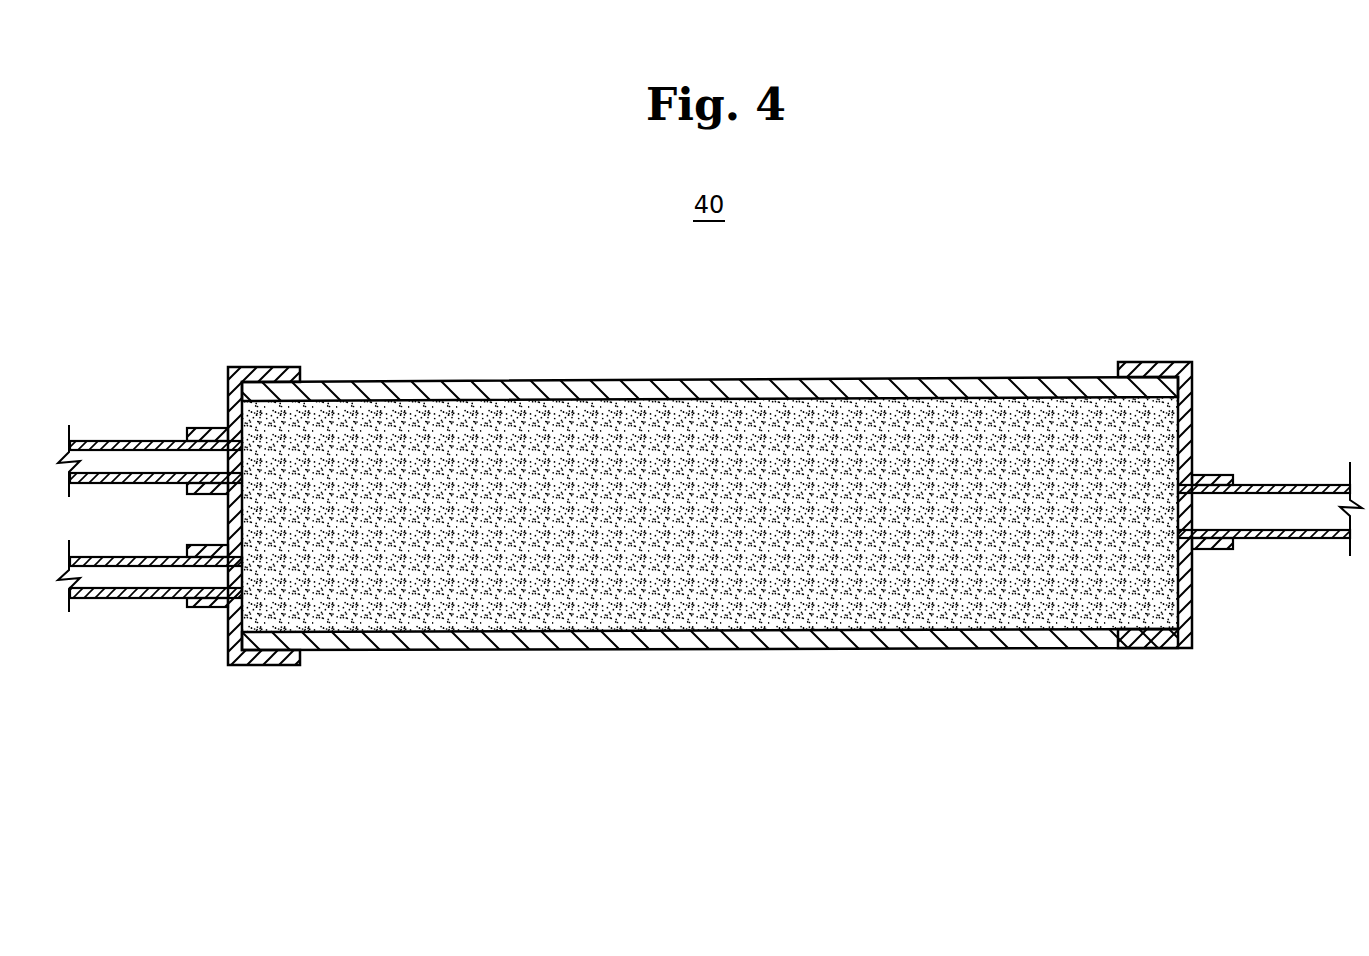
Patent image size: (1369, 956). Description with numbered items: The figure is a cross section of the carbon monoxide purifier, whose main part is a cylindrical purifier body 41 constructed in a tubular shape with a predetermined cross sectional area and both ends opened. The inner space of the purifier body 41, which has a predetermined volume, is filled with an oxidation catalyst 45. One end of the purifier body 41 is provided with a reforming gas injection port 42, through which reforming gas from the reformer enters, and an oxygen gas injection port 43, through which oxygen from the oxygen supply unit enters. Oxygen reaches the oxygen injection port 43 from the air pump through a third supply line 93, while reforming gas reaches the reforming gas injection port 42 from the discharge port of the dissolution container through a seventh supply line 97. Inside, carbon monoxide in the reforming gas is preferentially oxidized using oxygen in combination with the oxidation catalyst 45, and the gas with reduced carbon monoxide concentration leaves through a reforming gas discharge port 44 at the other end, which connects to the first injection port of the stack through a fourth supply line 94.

The purifier body 41 is at (632, 380).
The reforming gas injection port 42 is at (195, 607).
The oxygen gas injection port 43 is at (193, 428).
The reforming gas discharge port 44 is at (1215, 476).
The oxidation catalyst 45 is at (580, 436).
The third supply line 93 is at (103, 440).
The fourth supply line 94 is at (1288, 485).
The seventh supply line 97 is at (103, 599).